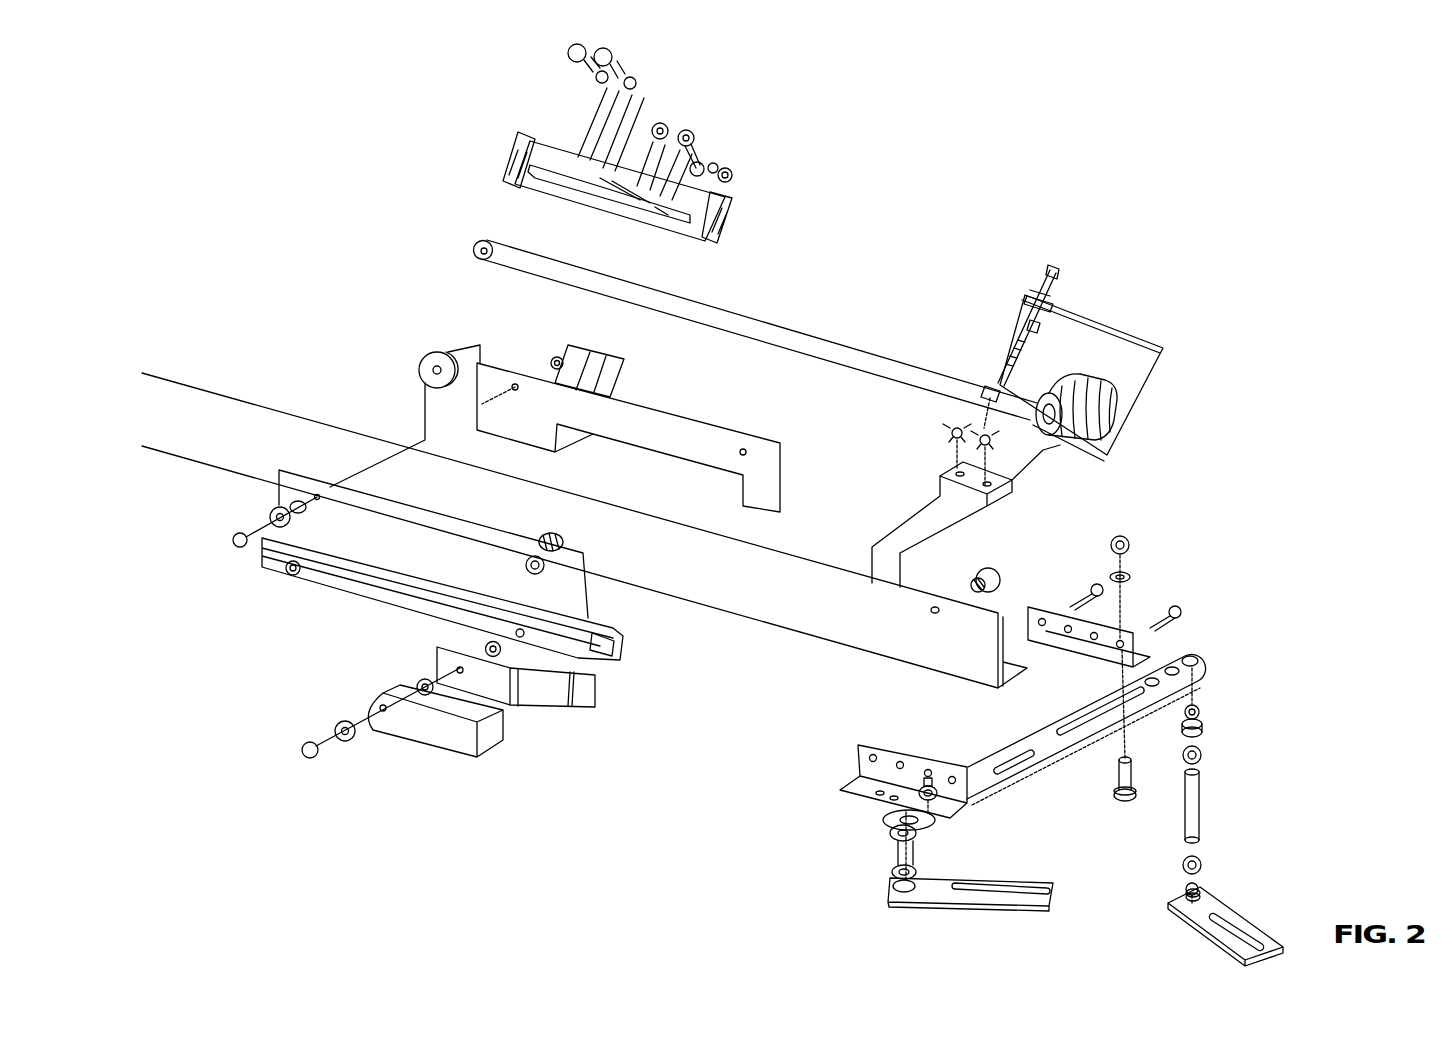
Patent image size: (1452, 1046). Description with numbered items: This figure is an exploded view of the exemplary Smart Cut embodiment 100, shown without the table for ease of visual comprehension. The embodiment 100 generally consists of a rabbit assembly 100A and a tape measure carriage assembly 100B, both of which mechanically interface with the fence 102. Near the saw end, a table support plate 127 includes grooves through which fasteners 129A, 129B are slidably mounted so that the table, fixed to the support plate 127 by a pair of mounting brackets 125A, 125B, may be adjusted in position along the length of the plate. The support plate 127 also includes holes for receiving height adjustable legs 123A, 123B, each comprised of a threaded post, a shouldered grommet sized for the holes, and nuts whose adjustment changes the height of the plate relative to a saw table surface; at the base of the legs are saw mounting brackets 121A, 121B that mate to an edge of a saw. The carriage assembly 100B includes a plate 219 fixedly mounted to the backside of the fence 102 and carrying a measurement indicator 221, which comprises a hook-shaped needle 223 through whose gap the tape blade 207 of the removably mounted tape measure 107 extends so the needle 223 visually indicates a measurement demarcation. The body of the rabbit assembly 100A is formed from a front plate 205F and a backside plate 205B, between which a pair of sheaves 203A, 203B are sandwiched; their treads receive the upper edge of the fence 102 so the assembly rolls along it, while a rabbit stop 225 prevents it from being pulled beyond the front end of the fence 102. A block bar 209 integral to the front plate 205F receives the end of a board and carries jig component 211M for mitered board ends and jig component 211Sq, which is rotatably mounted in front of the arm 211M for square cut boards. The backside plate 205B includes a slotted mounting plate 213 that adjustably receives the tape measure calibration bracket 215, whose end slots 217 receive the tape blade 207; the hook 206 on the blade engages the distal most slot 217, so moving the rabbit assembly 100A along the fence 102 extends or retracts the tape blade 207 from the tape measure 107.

The Smart Cut embodiment 100 is at (1362, 112).
The rabbit assembly 100A is at (249, 238).
The tape measure carriage assembly 100B is at (1133, 265).
The fence 102 is at (795, 592).
The tape measure 107 is at (1117, 433).
The saw mounting bracket 121A is at (952, 902).
The saw mounting bracket 121B is at (1235, 907).
The height adjustable leg 123A is at (897, 853).
The height adjustable leg 123B is at (1203, 803).
The mounting bracket 125A is at (868, 765).
The mounting bracket 125B is at (1147, 650).
The table support plate 127 is at (1185, 667).
The fastener 129A is at (928, 775).
The fastener 129B is at (1127, 805).
The sheave 203A is at (420, 370).
The sheave 203B is at (553, 540).
The backside plate 205B is at (667, 427).
The front plate 205F is at (573, 585).
The hook 206 is at (470, 257).
The tape blade 207 is at (780, 325).
The block bar 209 is at (365, 592).
The jig component 211M is at (583, 700).
The jig component 211Sq is at (444, 737).
The slotted mounting plate 213 is at (595, 360).
The tape measure calibration bracket 215 is at (552, 189).
The slot 217 is at (518, 134).
The plate 219 is at (1157, 368).
The measurement indicator 221 is at (1052, 268).
The needle 223 is at (990, 390).
The rabbit stop 225 is at (988, 567).